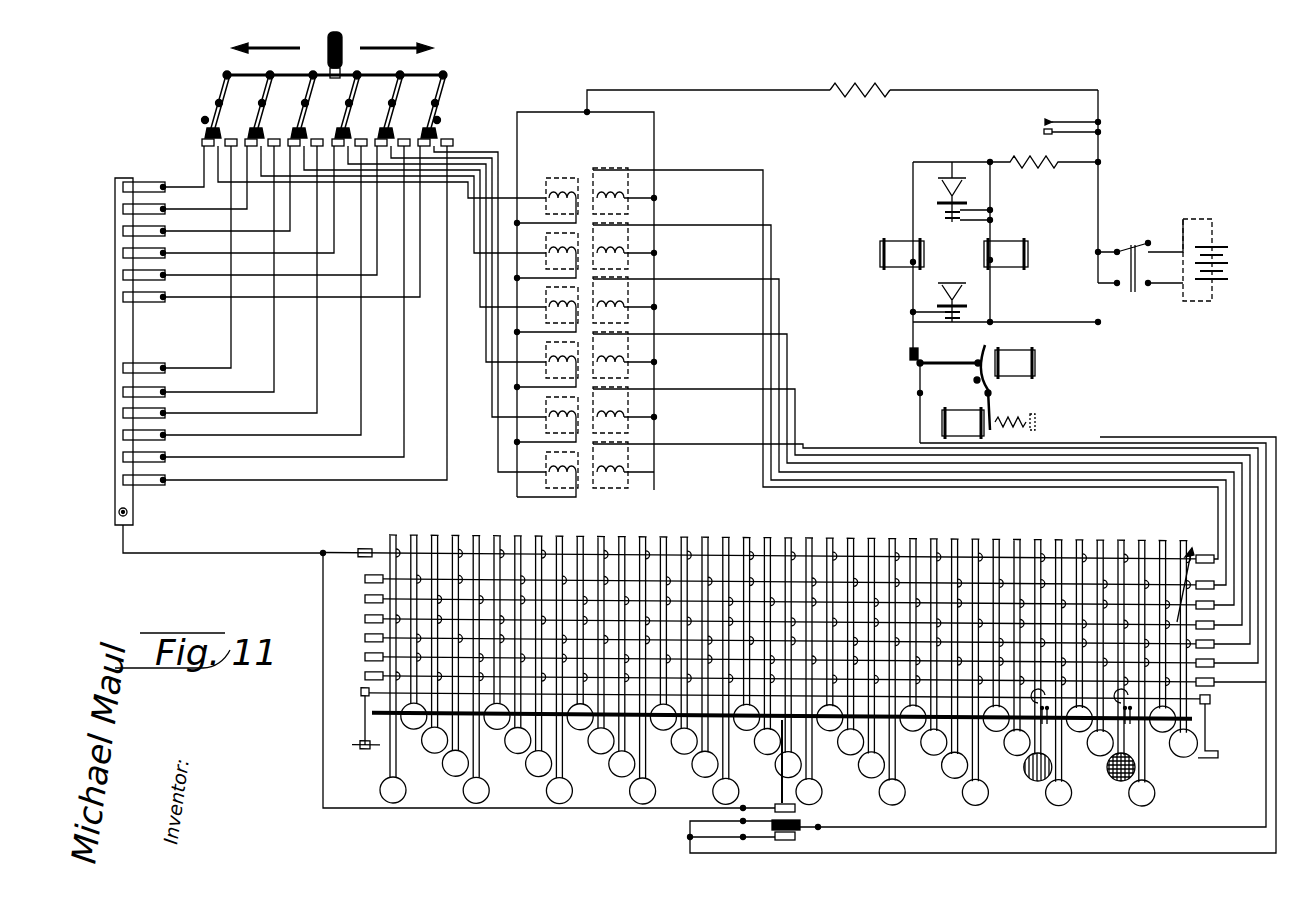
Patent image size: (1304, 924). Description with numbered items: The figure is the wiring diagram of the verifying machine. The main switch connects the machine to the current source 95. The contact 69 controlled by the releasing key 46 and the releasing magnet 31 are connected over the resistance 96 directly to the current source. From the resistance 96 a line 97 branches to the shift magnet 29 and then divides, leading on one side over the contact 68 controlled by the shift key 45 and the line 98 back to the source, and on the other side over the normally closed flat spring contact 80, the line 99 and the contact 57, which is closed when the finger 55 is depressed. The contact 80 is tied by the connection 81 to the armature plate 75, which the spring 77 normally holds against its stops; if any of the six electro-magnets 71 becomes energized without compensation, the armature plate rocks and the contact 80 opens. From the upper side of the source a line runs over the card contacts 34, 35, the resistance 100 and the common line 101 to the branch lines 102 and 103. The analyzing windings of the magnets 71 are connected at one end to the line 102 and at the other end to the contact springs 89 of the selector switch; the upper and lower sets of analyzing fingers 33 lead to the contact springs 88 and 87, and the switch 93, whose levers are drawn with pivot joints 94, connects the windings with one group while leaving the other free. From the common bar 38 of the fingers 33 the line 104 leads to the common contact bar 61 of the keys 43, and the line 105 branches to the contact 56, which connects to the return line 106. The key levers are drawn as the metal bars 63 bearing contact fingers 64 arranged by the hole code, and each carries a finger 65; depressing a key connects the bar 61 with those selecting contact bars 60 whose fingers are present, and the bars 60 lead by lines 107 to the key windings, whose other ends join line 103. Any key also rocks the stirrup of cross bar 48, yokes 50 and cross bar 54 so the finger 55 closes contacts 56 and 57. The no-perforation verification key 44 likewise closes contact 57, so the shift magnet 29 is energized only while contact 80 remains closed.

The shift magnet 29 is at (902, 254).
The releasing magnet 31 is at (1006, 254).
The contact fingers 33 is at (153, 482).
The card contact 34 is at (1048, 120).
The card contact 35 is at (1046, 133).
The common bar 38 is at (130, 510).
The keys 43 is at (640, 802).
The no-perforation verification key 44 is at (1187, 750).
The shift key 45 is at (1026, 780).
The releasing key 46 is at (952, 176).
The cross bar 48 is at (1187, 702).
The yokes 50 is at (366, 720).
The cross bar 54 is at (378, 718).
The finger 55 is at (780, 784).
The contact 56 is at (797, 808).
The contact 57 is at (797, 836).
The contact bars 60 is at (1195, 572).
The common contact bar 61 is at (364, 549).
The contact bars 63 is at (548, 538).
The contact fingers 64 is at (690, 578).
The contact finger 65 is at (728, 558).
The contact 68 is at (952, 324).
The contact 69 is at (1160, 760).
The electro-magnets 71 is at (568, 182).
The armature plate 75 is at (988, 352).
The spring 77 is at (1010, 418).
The flat spring contact 80 is at (910, 360).
The connection 81 is at (949, 401).
The contact springs 87 is at (305, 130).
The contact springs 88 is at (205, 135).
The contact springs 89 is at (205, 143).
The switch 93 is at (338, 44).
The joint 94 is at (263, 133).
The current source 95 is at (1185, 283).
The resistance 96 is at (1044, 174).
The line 97 is at (913, 184).
The line 98 is at (1048, 322).
The line 99 is at (1068, 443).
The resistance 100 is at (860, 76).
The common line 101 is at (842, 88).
The branch line 102 is at (553, 107).
The branch line 103 is at (656, 140).
The line 104 is at (224, 540).
The line 105 is at (323, 788).
The line 106 is at (1130, 437).
The lines 107 is at (1080, 462).